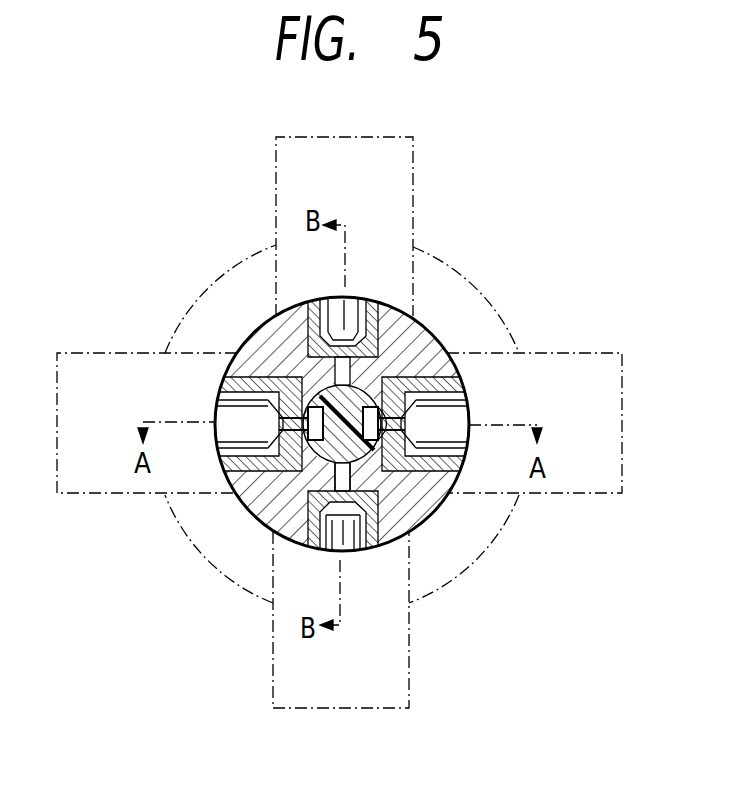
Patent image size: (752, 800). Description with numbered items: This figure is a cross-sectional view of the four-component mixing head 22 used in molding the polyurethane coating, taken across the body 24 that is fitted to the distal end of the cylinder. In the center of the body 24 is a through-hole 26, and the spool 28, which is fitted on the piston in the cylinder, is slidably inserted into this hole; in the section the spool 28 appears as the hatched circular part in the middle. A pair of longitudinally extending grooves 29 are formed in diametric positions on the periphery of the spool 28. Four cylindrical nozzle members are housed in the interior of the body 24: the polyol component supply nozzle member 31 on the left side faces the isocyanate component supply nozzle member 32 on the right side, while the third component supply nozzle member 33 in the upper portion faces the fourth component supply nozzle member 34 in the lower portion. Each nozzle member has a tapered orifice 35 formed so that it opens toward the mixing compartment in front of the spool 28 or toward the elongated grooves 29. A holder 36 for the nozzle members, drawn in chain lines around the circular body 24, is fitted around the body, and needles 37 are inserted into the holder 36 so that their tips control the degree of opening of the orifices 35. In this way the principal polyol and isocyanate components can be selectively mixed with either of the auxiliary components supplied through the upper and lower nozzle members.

The four-component mixing head 22 is at (252, 222).
The body 24 is at (270, 318).
The through-hole 26 is at (322, 388).
The spool 28 is at (398, 512).
The longitudinally extending grooves 29 is at (405, 478).
The polyol component supply nozzle member 31 is at (228, 377).
The isocyanate component supply nozzle member 32 is at (463, 387).
The third component supply nozzle member 33 is at (372, 297).
The fourth component supply nozzle member 34 is at (372, 552).
The tapered orifice 35 is at (420, 368).
The holder 36 is at (66, 352).
The needles 37 is at (232, 412).